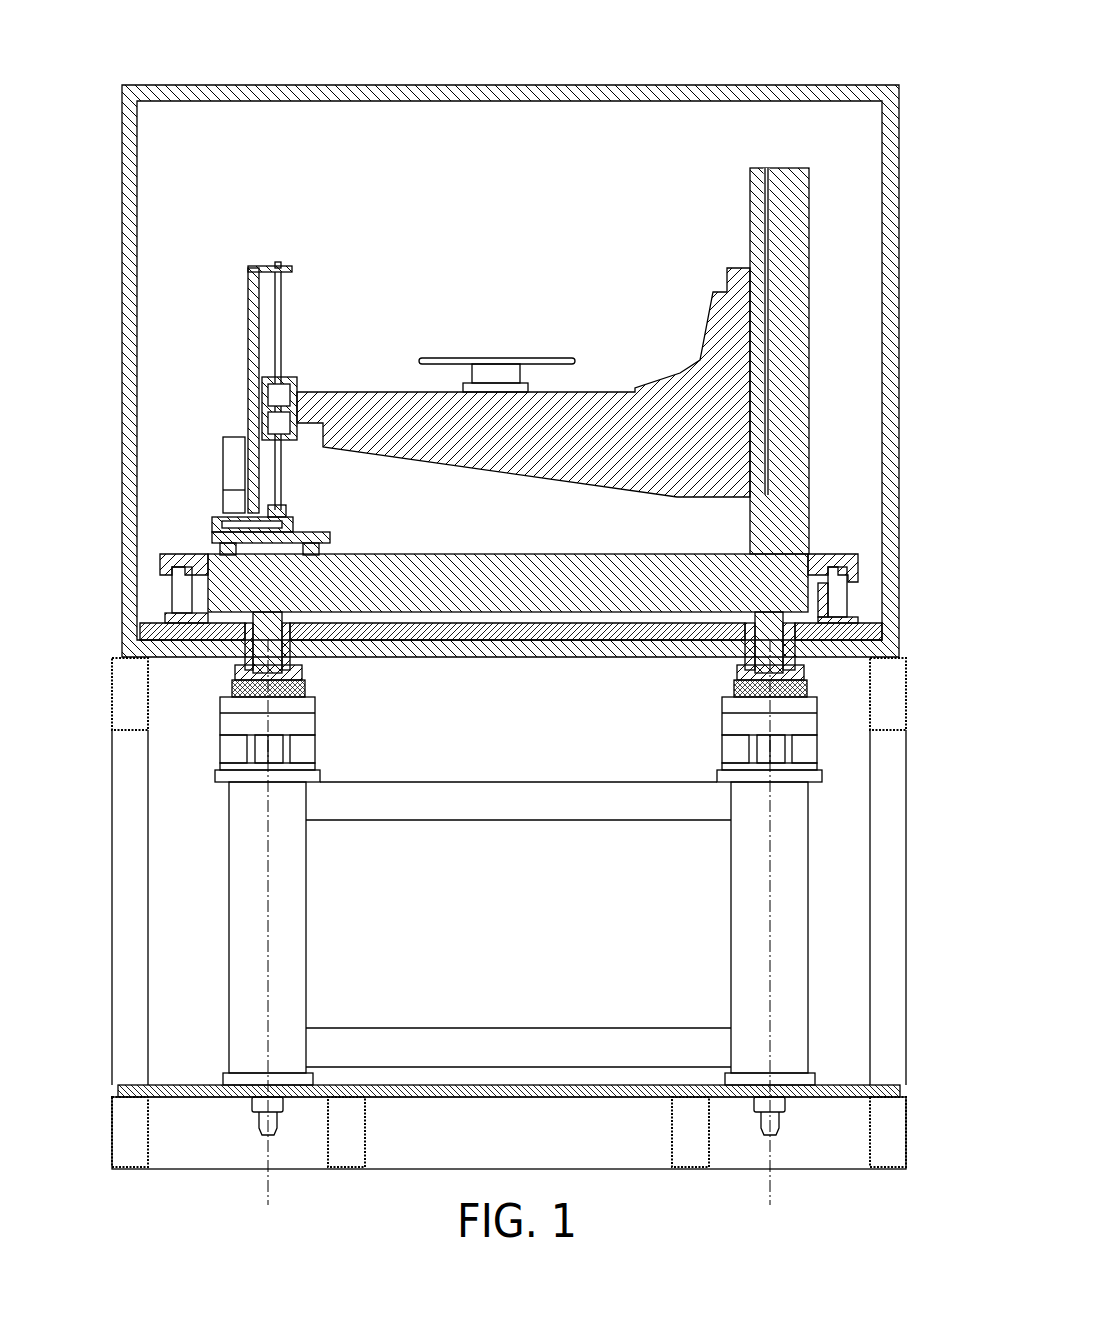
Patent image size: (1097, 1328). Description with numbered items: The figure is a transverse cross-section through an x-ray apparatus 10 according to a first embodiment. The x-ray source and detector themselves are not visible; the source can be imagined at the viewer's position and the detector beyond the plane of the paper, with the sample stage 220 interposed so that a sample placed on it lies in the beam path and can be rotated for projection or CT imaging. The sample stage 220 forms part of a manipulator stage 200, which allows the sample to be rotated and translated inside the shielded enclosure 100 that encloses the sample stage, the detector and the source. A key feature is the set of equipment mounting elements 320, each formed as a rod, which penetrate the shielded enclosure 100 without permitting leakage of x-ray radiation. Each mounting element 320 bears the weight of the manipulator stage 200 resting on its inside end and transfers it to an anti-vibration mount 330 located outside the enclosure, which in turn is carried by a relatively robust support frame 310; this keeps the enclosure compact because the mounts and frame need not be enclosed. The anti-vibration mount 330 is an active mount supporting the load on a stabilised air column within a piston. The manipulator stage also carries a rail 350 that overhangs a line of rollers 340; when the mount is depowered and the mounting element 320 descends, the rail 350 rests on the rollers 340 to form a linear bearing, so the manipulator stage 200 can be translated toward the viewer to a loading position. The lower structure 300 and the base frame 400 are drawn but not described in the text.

The x-ray apparatus 10 is at (908, 36).
The shielded enclosure 100 is at (886, 238).
The manipulator stage 200 is at (791, 160).
The sample stage 220 is at (502, 356).
The platform base 300 is at (818, 706).
The support frame 310 is at (752, 943).
The equipment mounting element 320 is at (745, 652).
The anti-vibration mount 330 is at (735, 727).
The rollers 340 is at (842, 598).
The rail 350 is at (845, 553).
The frame 400 is at (127, 943).